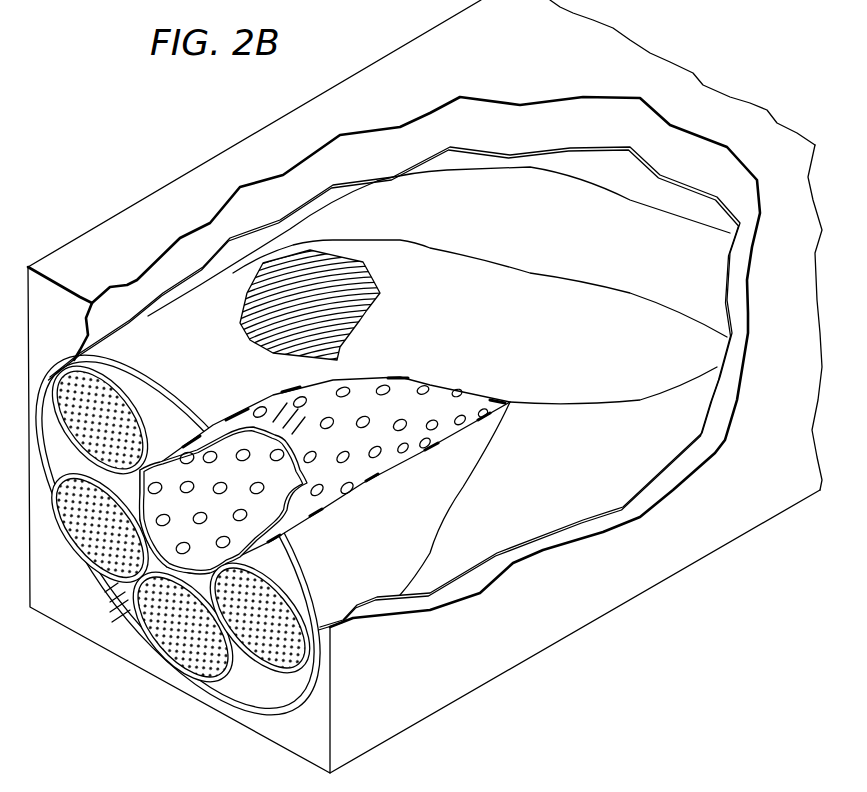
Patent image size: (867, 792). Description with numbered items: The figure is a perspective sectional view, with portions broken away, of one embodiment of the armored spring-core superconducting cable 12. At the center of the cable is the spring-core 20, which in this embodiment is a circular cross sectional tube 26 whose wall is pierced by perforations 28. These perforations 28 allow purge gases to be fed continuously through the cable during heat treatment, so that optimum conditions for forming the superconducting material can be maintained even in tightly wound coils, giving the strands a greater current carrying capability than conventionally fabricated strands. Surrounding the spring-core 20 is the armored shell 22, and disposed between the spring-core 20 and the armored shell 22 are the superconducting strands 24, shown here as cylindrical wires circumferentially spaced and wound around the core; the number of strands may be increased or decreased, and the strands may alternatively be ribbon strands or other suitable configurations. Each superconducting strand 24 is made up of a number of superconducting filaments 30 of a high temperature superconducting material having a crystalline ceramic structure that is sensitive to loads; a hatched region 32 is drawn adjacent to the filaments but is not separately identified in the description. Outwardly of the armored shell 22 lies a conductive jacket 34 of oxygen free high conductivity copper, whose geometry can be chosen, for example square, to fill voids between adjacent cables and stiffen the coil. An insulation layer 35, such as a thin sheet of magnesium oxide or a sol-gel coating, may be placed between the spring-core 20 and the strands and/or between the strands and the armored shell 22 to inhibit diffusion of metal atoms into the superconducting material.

The armored spring-core superconducting cable 12 is at (140, 166).
The spring-core 20 is at (150, 457).
The armored shell 22 is at (120, 636).
The superconducting strand 24 is at (50, 375).
The tube 26 is at (330, 500).
The perforations 28 is at (403, 428).
The superconducting filaments 30 is at (362, 314).
The hatched layer region 32 is at (365, 297).
The conductive jacket 34 is at (73, 620).
The insulation layer 35 is at (277, 395).